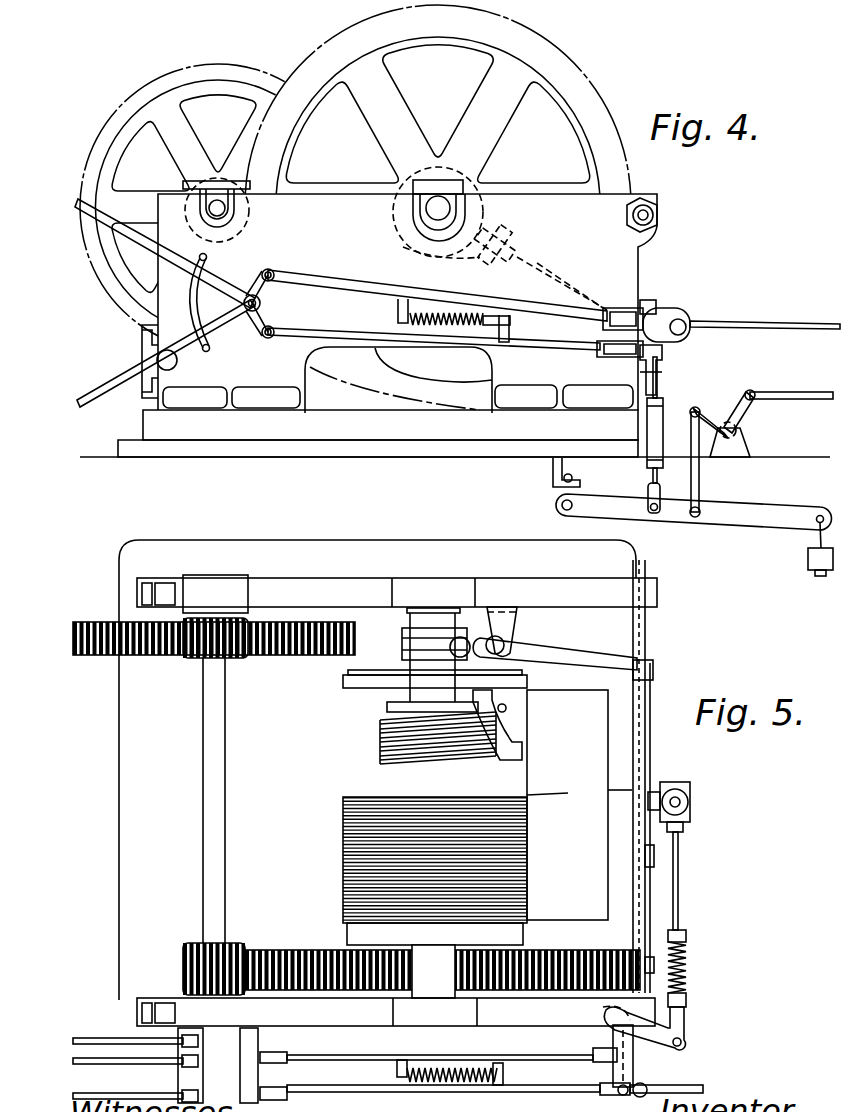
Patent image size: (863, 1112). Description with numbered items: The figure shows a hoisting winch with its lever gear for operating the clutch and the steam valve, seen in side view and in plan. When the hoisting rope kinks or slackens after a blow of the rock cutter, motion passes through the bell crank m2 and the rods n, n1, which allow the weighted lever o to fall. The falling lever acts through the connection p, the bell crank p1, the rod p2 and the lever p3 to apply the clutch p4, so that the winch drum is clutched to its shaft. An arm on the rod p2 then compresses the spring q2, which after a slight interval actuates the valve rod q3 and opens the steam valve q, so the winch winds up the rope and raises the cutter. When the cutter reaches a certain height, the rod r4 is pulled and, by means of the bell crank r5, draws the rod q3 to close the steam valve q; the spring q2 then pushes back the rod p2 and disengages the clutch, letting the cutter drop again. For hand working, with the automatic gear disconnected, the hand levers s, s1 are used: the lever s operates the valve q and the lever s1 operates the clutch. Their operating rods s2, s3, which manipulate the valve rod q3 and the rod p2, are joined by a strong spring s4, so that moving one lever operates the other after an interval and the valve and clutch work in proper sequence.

In FIG. 4, the clutch p4 is at (438, 168).
In FIG. 5, the clutch p4 is at (432, 640).
In FIG. 4, the hand lever s is at (223, 288).
In FIG. 5, the hand lever s is at (88, 1093).
In FIG. 4, the hand lever s1 is at (225, 322).
In FIG. 5, the hand lever s1 is at (108, 1060).
In FIG. 4, the operating rod s2 is at (340, 283).
In FIG. 5, the operating rod s2 is at (292, 1058).
In FIG. 4, the operating rod s3 is at (305, 333).
In FIG. 5, the operating rod s3 is at (345, 1092).
In FIG. 4, the strong spring s4 is at (470, 313).
In FIG. 5, the strong spring s4 is at (463, 1072).
In FIG. 4, the lever p3 is at (557, 295).
In FIG. 5, the lever p3 is at (620, 632).
In FIG. 5, the rod p2 is at (648, 715).
In FIG. 4, the bell crank p1 is at (637, 372).
In FIG. 5, the bell crank p1 is at (652, 962).
In FIG. 4, the connection p is at (660, 435).
In FIG. 4, the steam valve q is at (655, 305).
In FIG. 5, the steam valve q is at (690, 786).
In FIG. 5, the spring q2 is at (690, 965).
In FIG. 5, the valve rod q3 is at (680, 858).
In FIG. 4, the bell crank r5 is at (668, 318).
In FIG. 5, the bell crank r5 is at (660, 1035).
In FIG. 4, the rod r4 is at (700, 325).
In FIG. 5, the rod r4 is at (695, 1090).
In FIG. 4, the rod n is at (785, 393).
In FIG. 4, the rod n1 is at (690, 494).
In FIG. 4, the bell crank m2 is at (738, 420).
In FIG. 4, the weighted lever o is at (775, 520).